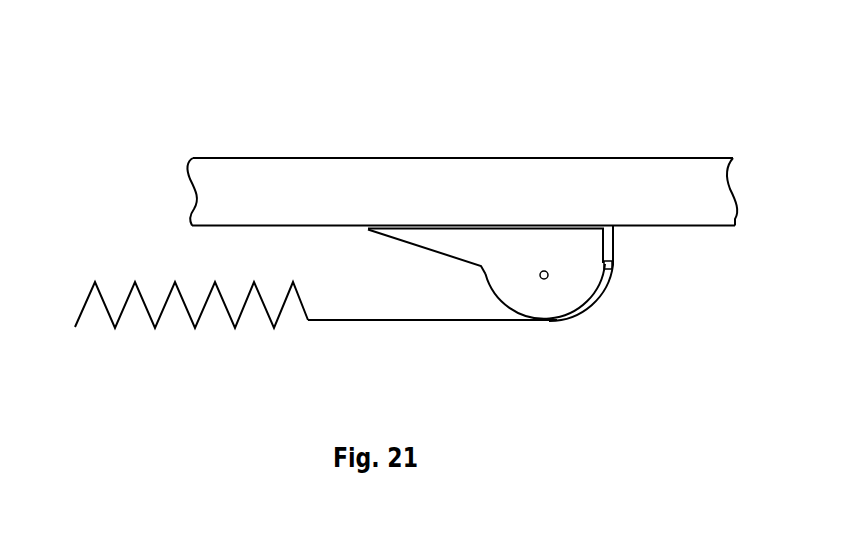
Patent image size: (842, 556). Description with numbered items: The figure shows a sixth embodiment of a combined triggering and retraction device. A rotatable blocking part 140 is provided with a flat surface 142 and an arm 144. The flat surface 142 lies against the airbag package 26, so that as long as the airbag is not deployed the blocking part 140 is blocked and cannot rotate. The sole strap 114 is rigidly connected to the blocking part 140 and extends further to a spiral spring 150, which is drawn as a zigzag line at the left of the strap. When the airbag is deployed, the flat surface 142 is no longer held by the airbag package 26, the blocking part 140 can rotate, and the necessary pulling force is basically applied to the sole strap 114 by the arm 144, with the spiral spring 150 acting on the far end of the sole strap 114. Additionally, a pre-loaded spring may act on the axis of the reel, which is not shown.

The upper bar / base member 26 is at (538, 170).
The flat surface 142 is at (559, 216).
The arm 144 is at (442, 243).
The rotatable blocking part 140 is at (568, 282).
The sole strap 114 is at (443, 321).
The spiral spring 150 is at (152, 325).